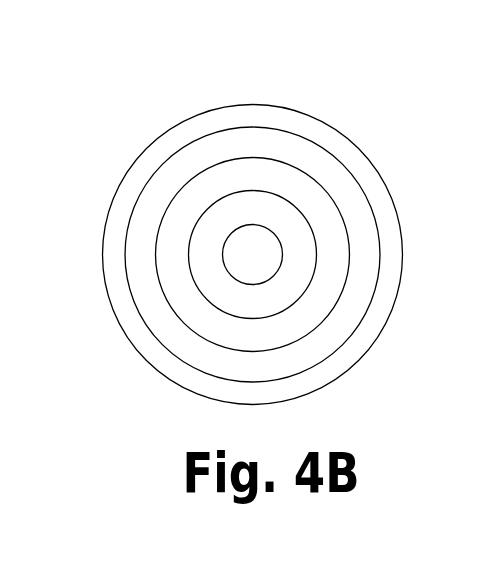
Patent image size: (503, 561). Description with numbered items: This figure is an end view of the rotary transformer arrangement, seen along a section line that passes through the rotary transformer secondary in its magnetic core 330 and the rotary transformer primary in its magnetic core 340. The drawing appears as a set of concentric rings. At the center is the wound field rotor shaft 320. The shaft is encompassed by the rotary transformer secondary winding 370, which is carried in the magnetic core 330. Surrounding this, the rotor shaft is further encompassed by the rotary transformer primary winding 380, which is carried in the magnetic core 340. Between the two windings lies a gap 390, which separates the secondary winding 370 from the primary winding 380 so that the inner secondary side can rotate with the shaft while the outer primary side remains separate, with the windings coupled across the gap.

The wound field rotor shaft 320 is at (267, 262).
The magnetic core 330 is at (250, 204).
The magnetic core 340 is at (301, 120).
The rotary transformer secondary winding 370 is at (333, 238).
The rotary transformer primary winding 380 is at (318, 162).
The gap 390 is at (335, 202).